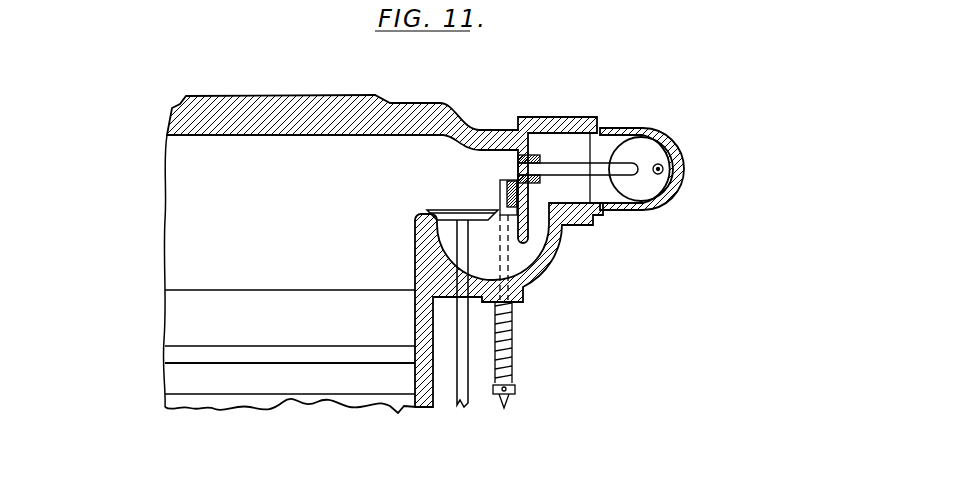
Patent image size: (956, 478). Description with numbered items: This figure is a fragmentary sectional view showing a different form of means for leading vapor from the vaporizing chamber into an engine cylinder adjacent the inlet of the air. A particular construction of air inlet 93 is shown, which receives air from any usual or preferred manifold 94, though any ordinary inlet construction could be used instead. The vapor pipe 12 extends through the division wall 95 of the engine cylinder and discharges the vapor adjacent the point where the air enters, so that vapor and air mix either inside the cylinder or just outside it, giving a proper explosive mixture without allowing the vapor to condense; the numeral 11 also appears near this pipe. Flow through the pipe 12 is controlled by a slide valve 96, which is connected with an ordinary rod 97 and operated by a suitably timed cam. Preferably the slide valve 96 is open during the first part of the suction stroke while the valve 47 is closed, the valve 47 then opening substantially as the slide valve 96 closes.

The pivot pin 11 is at (663, 165).
The vapor pipe 12 is at (602, 170).
The valve 47 is at (447, 212).
The air inlet 93 is at (492, 260).
The manifold 94 is at (657, 188).
The division wall 95 is at (533, 158).
The slide valve 96 is at (497, 192).
The rod 97 is at (515, 398).